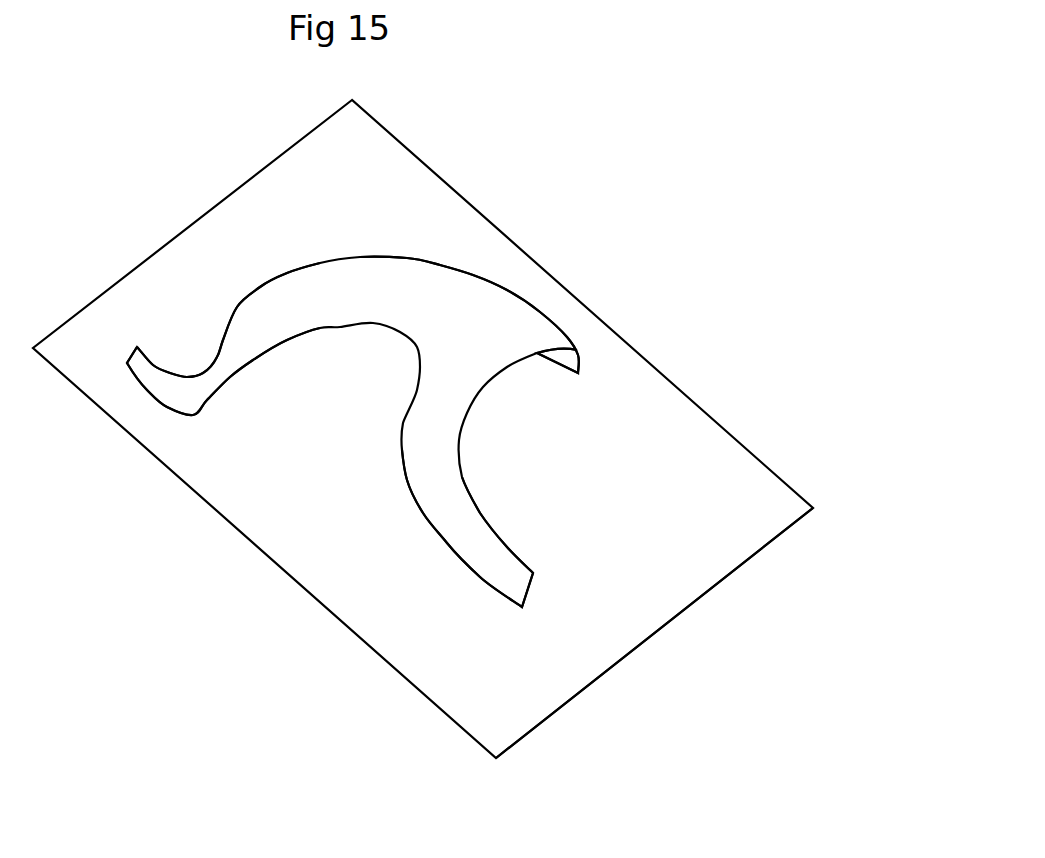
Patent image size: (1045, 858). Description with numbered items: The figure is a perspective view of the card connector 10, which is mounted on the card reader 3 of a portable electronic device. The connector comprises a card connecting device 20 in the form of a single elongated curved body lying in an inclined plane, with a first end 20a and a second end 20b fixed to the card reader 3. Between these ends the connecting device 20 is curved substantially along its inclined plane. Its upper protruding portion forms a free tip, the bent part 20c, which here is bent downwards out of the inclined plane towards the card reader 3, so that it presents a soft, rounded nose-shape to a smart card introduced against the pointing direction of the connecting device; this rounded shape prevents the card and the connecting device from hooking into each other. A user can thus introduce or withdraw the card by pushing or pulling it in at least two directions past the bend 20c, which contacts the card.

The card connector 10 is at (637, 240).
The card reader 3 is at (645, 510).
The card connecting device 20 is at (267, 240).
The first end 20a is at (163, 412).
The second end 20b is at (538, 597).
The bent part 20c is at (497, 272).